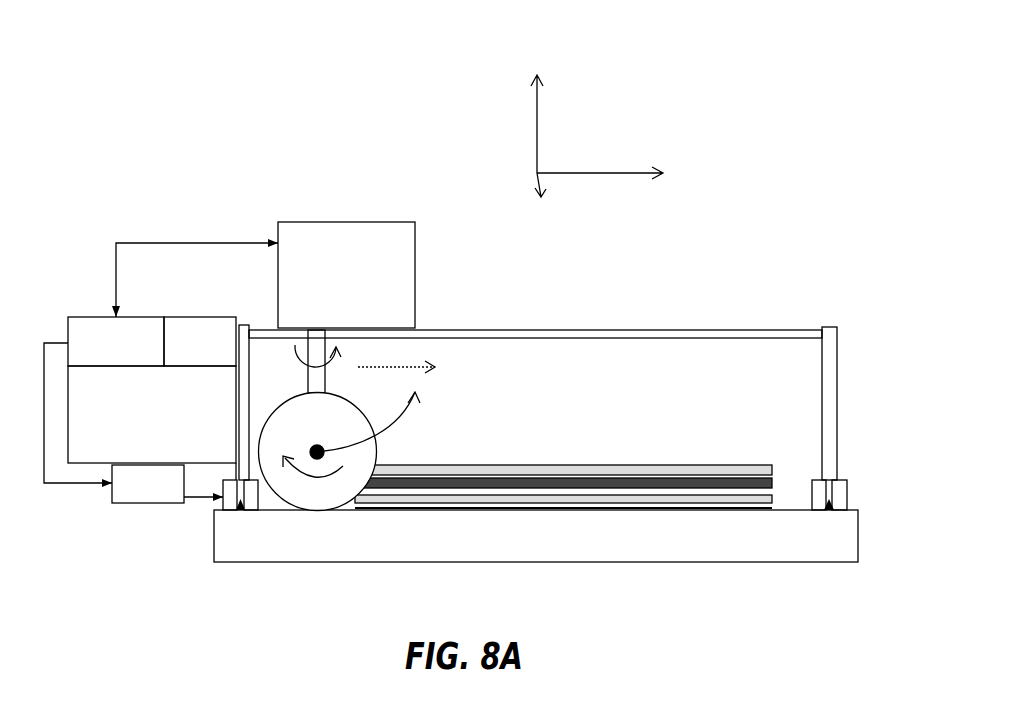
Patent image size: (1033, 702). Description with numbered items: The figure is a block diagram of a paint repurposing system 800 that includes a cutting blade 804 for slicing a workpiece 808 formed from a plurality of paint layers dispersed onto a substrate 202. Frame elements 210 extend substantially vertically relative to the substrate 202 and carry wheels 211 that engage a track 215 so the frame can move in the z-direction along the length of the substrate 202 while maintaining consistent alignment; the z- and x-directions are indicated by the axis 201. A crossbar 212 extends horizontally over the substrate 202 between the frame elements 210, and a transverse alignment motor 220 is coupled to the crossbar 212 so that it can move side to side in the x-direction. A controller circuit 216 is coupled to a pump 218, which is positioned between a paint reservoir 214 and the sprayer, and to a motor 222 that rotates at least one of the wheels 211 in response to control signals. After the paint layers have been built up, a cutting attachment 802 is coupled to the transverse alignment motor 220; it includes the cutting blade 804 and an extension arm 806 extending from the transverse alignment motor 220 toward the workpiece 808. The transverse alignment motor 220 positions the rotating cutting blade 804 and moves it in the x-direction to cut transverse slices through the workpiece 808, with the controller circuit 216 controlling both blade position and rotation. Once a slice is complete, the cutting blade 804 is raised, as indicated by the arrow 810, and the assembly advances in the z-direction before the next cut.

The paint repurposing system 800 is at (146, 62).
The axis 201 is at (537, 150).
The transverse alignment motor 220 is at (318, 228).
The controller circuit 216 is at (92, 317).
The pump 218 is at (188, 317).
The paint reservoir 214 is at (152, 423).
The motor 222 is at (133, 503).
The crossbar 212 is at (713, 330).
The frame elements 210 is at (828, 326).
The wheels 211 is at (811, 508).
The track 215 is at (828, 512).
The substrate 202 is at (310, 562).
The cutting blade 804 is at (333, 498).
The extension arm 806 is at (325, 373).
The cutting attachment 802 is at (495, 381).
The workpiece 808 is at (640, 420).
The arrow 810 is at (408, 418).